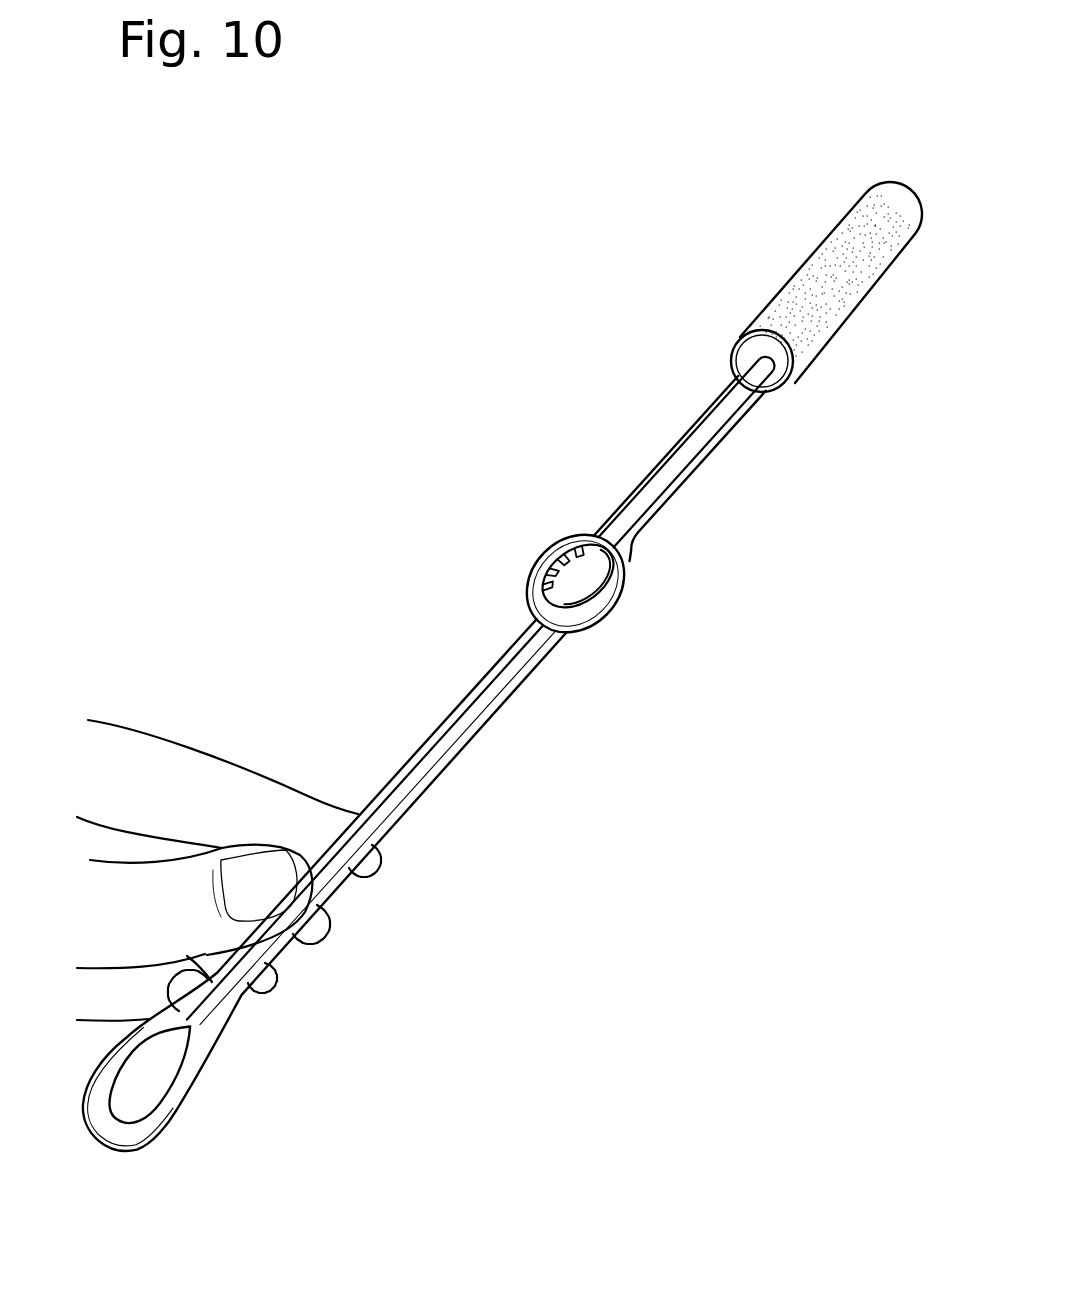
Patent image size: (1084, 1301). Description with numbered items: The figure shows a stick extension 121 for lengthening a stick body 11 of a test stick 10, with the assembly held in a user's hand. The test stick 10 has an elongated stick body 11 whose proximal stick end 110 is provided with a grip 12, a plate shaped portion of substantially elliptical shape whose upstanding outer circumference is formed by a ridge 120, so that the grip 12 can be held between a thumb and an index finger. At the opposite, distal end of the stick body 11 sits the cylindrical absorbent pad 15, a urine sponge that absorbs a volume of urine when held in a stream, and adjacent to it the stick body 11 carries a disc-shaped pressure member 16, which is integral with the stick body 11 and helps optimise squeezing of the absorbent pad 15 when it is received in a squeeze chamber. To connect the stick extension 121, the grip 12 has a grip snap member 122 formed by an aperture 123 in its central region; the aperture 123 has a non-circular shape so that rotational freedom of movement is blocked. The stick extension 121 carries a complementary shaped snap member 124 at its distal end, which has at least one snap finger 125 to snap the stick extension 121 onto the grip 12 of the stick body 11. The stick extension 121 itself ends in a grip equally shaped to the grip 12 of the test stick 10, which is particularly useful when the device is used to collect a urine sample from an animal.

The test stick 10 is at (690, 368).
The stick body 11 is at (705, 448).
The grip 12 is at (650, 568).
The absorbent pad 15 is at (813, 228).
The pressure member 16 is at (782, 380).
The proximal stick end 110 is at (538, 548).
The ridge 120 is at (588, 612).
The stick extension 121 is at (402, 909).
The grip snap member 122 is at (613, 577).
The aperture 123 is at (613, 577).
The snap member 124 is at (538, 573).
The snap finger 125 is at (546, 587).